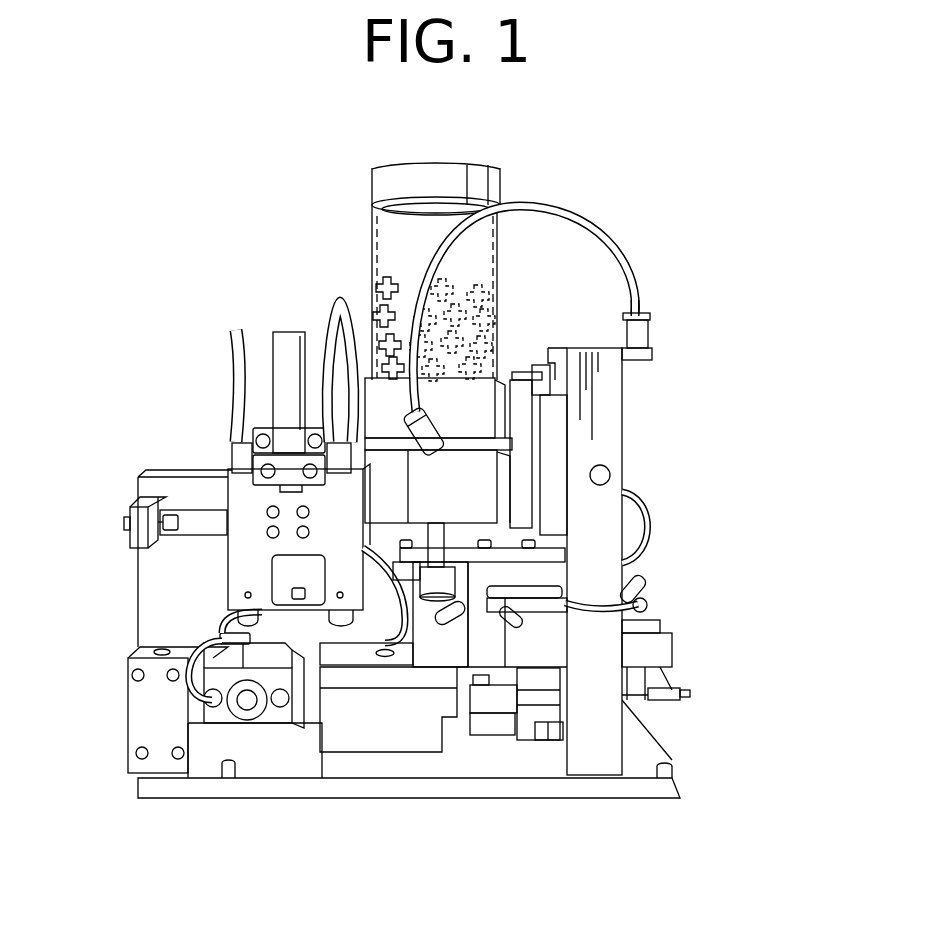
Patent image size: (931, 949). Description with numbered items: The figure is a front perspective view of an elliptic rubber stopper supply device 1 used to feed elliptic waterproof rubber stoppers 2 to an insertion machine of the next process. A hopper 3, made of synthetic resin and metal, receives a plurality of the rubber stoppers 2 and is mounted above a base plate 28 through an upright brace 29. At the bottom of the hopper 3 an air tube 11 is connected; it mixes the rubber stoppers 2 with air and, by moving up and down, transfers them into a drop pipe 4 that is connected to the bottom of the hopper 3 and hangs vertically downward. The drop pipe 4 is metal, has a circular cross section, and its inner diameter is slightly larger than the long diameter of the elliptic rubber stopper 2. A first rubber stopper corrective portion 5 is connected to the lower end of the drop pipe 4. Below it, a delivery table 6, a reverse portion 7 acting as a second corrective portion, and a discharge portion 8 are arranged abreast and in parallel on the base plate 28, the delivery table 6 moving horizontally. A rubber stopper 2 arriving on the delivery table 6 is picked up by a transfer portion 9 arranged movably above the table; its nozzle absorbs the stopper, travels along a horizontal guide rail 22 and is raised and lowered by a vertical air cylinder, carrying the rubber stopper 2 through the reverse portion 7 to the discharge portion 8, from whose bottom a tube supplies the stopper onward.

The elliptic rubber stopper supply device 1 is at (795, 414).
The waterproof rubber stopper 2 is at (494, 298).
The hopper 3 is at (498, 272).
The drop pipe 4 is at (448, 536).
The first rubber stopper corrective portion 5 is at (460, 638).
The delivery table 6 is at (407, 675).
The reverse portion 7 is at (248, 705).
The discharge portion 8 is at (155, 725).
The transfer portion 9 is at (243, 578).
The air tube 11 is at (525, 210).
The horizontal guide rail 22 is at (207, 520).
The base plate 28 is at (407, 773).
The brace 29 is at (607, 443).